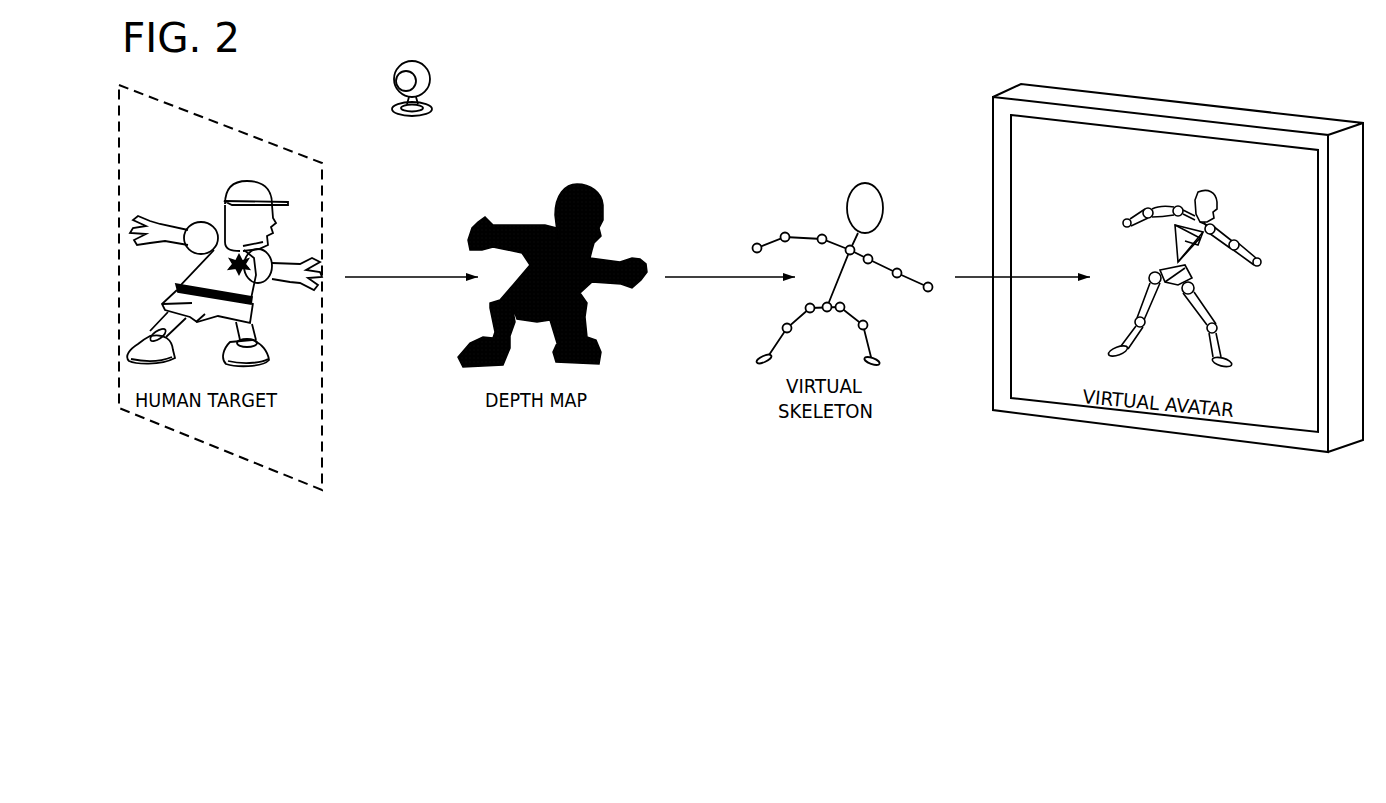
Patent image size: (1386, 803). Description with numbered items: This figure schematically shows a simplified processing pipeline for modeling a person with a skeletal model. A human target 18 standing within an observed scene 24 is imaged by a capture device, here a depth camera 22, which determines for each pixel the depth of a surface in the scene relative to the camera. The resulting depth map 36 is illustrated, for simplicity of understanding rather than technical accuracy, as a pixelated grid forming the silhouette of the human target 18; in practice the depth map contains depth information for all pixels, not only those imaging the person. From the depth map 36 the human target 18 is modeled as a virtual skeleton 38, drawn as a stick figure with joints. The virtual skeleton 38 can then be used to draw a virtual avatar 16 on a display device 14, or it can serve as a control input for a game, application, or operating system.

The display device 14 is at (1293, 331).
The virtual avatar 16 is at (1200, 190).
The human target 18 is at (230, 286).
The depth camera 22 is at (429, 71).
The observed scene 24 is at (172, 149).
The depth map 36 is at (565, 184).
The virtual skeleton 38 is at (877, 218).